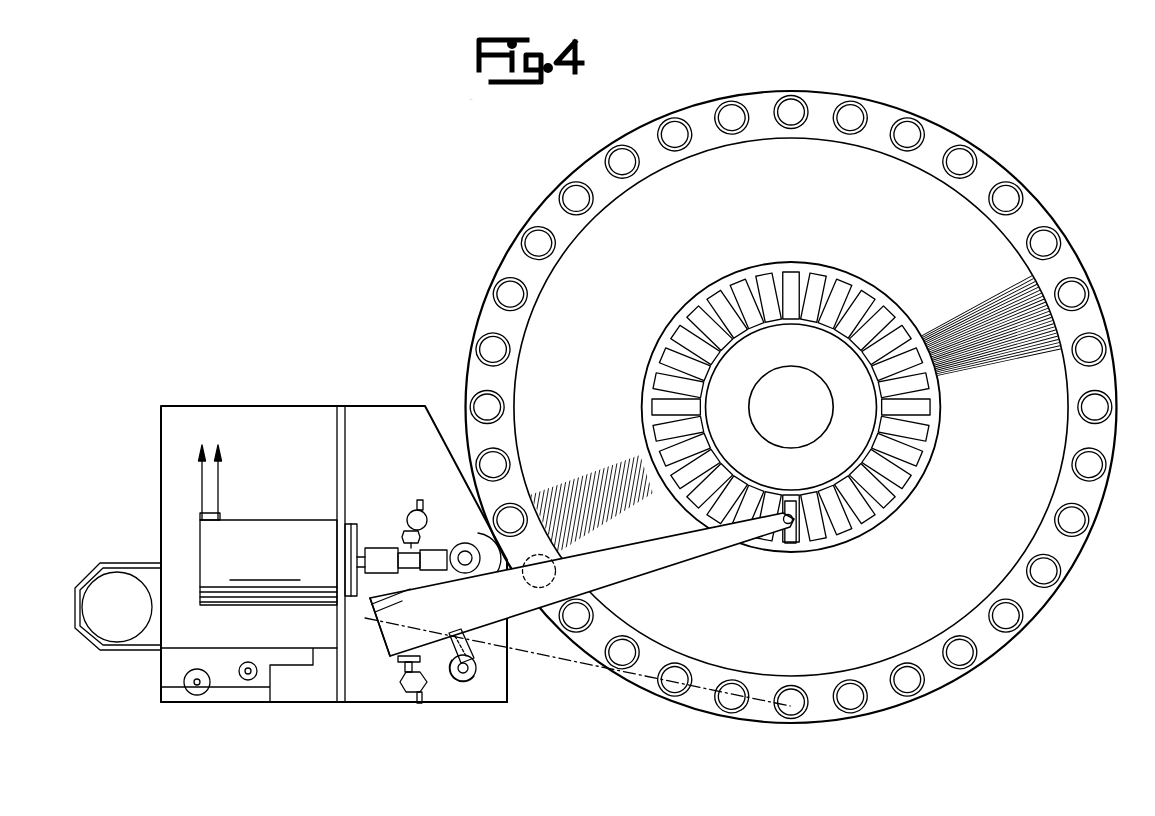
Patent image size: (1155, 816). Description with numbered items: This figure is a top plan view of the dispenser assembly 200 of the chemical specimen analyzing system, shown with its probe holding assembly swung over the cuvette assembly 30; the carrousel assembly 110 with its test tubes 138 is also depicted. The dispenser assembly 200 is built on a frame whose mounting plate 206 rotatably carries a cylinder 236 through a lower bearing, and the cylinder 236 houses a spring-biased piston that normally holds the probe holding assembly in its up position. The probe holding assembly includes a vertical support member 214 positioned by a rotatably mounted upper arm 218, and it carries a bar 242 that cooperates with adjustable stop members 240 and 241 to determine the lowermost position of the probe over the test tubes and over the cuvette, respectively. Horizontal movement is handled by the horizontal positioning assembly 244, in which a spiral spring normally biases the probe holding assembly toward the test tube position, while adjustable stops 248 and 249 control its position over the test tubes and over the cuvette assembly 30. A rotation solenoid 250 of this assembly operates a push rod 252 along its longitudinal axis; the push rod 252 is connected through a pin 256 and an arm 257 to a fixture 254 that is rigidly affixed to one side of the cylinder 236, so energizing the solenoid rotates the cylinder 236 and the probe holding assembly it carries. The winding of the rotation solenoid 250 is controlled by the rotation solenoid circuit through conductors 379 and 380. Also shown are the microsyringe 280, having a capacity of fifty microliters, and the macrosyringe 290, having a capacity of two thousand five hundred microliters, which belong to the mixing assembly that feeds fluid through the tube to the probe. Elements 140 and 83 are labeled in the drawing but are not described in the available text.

The dispenser assembly 200 is at (275, 108).
The cuvette assembly 30 is at (857, 270).
The carrousel assembly 110 is at (1097, 290).
The test tubes 138 is at (1072, 526).
The reference bolt hole 140 is at (794, 692).
The timing mark element 83 is at (785, 546).
The upper arm 218 is at (688, 568).
The adjustable stop member 240 is at (579, 609).
The arm 257 is at (398, 600).
The vertical support member 214 is at (380, 648).
The cylinder 236 is at (486, 630).
The bar 242 is at (478, 643).
The adjustable stop member 241 is at (480, 676).
The horizontal positioning assembly 244 is at (496, 732).
The adjustable stop 249 is at (433, 694).
The pin 256 is at (428, 512).
The fixture 254 is at (455, 549).
The adjustable stop 248 is at (402, 549).
The push rod 252 is at (375, 547).
The rotation solenoid 250 is at (287, 519).
The conductor 379 is at (220, 478).
The conductor 380 is at (200, 474).
The mounting plate 206 is at (280, 406).
The macrosyringe 290 is at (197, 696).
The microsyringe 280 is at (248, 682).